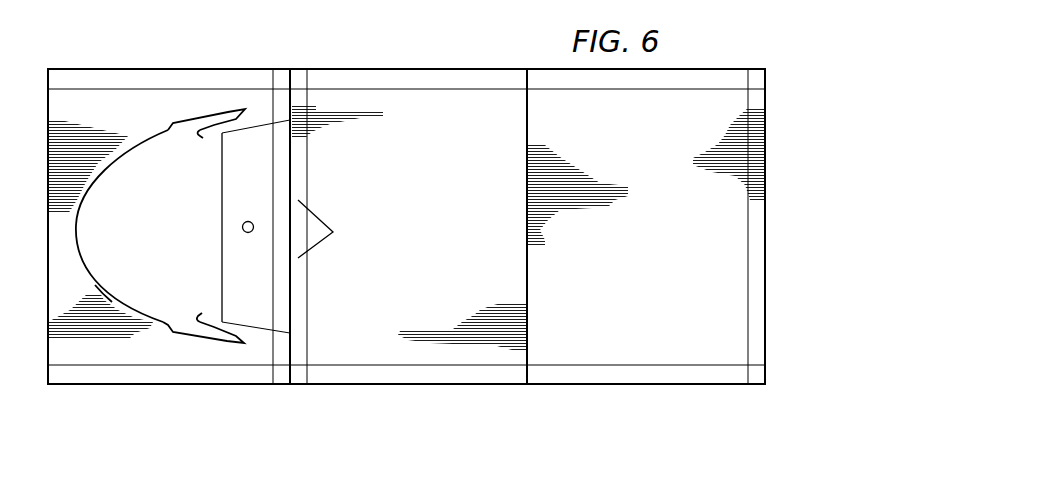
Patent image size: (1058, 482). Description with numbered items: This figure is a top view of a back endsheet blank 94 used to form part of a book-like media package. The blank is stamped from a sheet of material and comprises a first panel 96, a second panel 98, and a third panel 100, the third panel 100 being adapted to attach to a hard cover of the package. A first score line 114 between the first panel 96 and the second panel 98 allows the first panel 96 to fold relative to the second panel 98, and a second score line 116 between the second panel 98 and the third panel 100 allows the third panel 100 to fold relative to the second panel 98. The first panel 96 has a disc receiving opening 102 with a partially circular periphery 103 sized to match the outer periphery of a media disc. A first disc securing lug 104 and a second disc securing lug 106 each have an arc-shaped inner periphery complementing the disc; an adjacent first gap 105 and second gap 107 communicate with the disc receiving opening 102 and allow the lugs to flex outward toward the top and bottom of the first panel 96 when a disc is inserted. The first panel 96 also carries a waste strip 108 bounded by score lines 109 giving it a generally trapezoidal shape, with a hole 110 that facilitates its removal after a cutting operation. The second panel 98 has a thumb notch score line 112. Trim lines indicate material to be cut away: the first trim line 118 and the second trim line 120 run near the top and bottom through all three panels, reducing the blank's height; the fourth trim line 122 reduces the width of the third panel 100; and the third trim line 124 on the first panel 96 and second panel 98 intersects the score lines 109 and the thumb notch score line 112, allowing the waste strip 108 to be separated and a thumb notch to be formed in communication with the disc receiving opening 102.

The back endsheet blank 94 is at (491, 425).
The first panel 96 is at (88, 348).
The second panel 98 is at (440, 352).
The third panel 100 is at (590, 345).
The disc receiving opening 102 is at (105, 224).
The partially circular periphery 103 is at (103, 294).
The first disc securing lug 104 is at (203, 138).
The first gap 105 is at (214, 105).
The second disc securing lug 106 is at (202, 313).
The second gap 107 is at (209, 344).
The waste strip 108 is at (222, 208).
The score lines 109 is at (255, 127).
The hole 110 is at (243, 231).
The thumb notch score line 112 is at (333, 232).
The first score line 114 is at (290, 383).
The second score line 116 is at (528, 330).
The first trim line 118 is at (638, 89).
The second trim line 120 is at (700, 363).
The fourth trim line 122 is at (747, 263).
The third trim line 124 is at (308, 318).